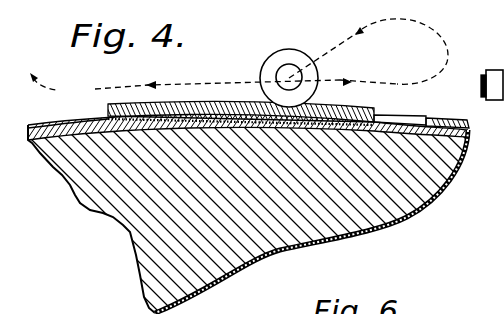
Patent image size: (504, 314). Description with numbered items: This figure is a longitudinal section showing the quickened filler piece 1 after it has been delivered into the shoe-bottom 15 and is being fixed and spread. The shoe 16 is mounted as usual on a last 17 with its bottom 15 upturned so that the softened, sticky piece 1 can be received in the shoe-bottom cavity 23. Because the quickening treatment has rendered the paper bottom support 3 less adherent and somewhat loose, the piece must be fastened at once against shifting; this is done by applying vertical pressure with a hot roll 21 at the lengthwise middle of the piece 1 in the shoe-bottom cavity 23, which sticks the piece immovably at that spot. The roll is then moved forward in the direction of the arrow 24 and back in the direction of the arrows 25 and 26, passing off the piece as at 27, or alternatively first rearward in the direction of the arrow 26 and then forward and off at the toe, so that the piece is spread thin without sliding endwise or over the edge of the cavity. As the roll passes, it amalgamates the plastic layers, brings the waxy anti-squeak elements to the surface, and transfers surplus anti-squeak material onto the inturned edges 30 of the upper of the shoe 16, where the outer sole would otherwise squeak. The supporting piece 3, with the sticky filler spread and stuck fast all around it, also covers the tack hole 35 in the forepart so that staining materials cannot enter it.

The piece 1 is at (343, 107).
The bottom support 3 is at (370, 108).
The shoe-bottom 15 is at (73, 135).
The shoe 16 is at (432, 198).
The last 17 is at (407, 184).
The hot roll 21 is at (327, 46).
The shoe-bottom cavity 23 is at (404, 116).
The arrow 24 is at (364, 69).
The arrow 25 is at (368, 43).
The arrow 26 is at (217, 72).
The arrow 27 is at (40, 69).
The inturned edges of the upper 30 is at (74, 128).
The tack hole 35 is at (247, 104).